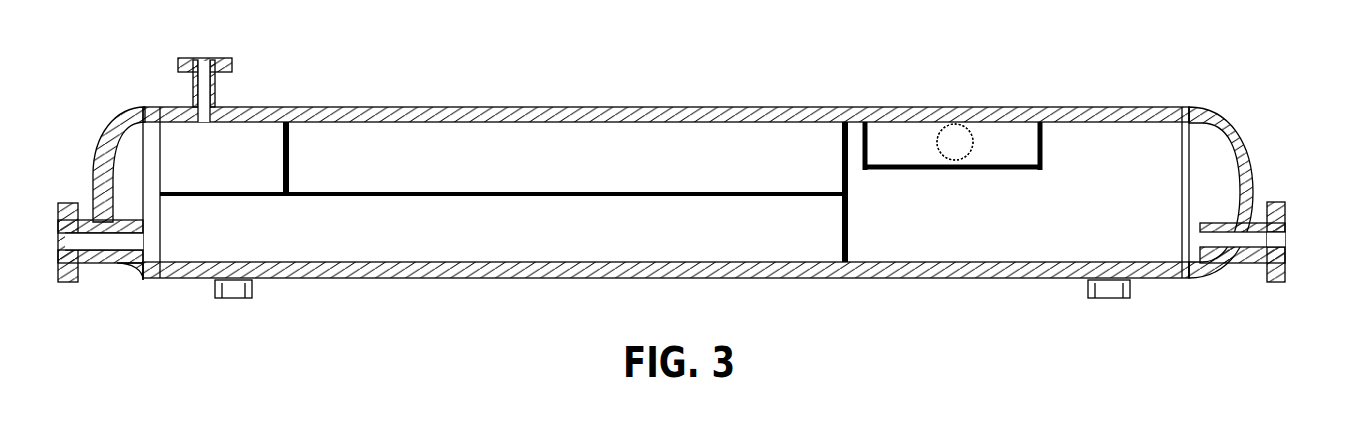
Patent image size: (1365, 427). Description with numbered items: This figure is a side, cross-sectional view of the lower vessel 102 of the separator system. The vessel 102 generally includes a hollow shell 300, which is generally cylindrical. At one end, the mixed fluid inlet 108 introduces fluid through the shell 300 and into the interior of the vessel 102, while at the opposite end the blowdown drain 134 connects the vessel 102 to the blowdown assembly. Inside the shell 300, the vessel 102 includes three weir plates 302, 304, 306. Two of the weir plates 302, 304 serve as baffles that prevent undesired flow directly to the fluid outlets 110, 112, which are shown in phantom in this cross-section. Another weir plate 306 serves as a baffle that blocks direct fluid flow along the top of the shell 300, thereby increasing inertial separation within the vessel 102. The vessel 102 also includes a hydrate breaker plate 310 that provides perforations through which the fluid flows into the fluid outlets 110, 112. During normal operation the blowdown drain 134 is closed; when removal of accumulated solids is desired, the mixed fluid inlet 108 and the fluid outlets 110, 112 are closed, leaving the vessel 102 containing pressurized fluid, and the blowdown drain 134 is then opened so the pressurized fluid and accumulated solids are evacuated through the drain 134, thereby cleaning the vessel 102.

The lower vessel 102 is at (1015, 44).
The mixed fluid inlet 108 is at (88, 220).
The fluid outlet 110 is at (948, 127).
The fluid outlet 112 is at (955, 142).
The blowdown drain 134 is at (1285, 279).
The hollow shell 300 is at (472, 107).
The weir plate 302 is at (1042, 142).
The weir plate 304 is at (863, 150).
The weir plate 306 is at (290, 150).
The hydrate breaker plate 310 is at (988, 170).